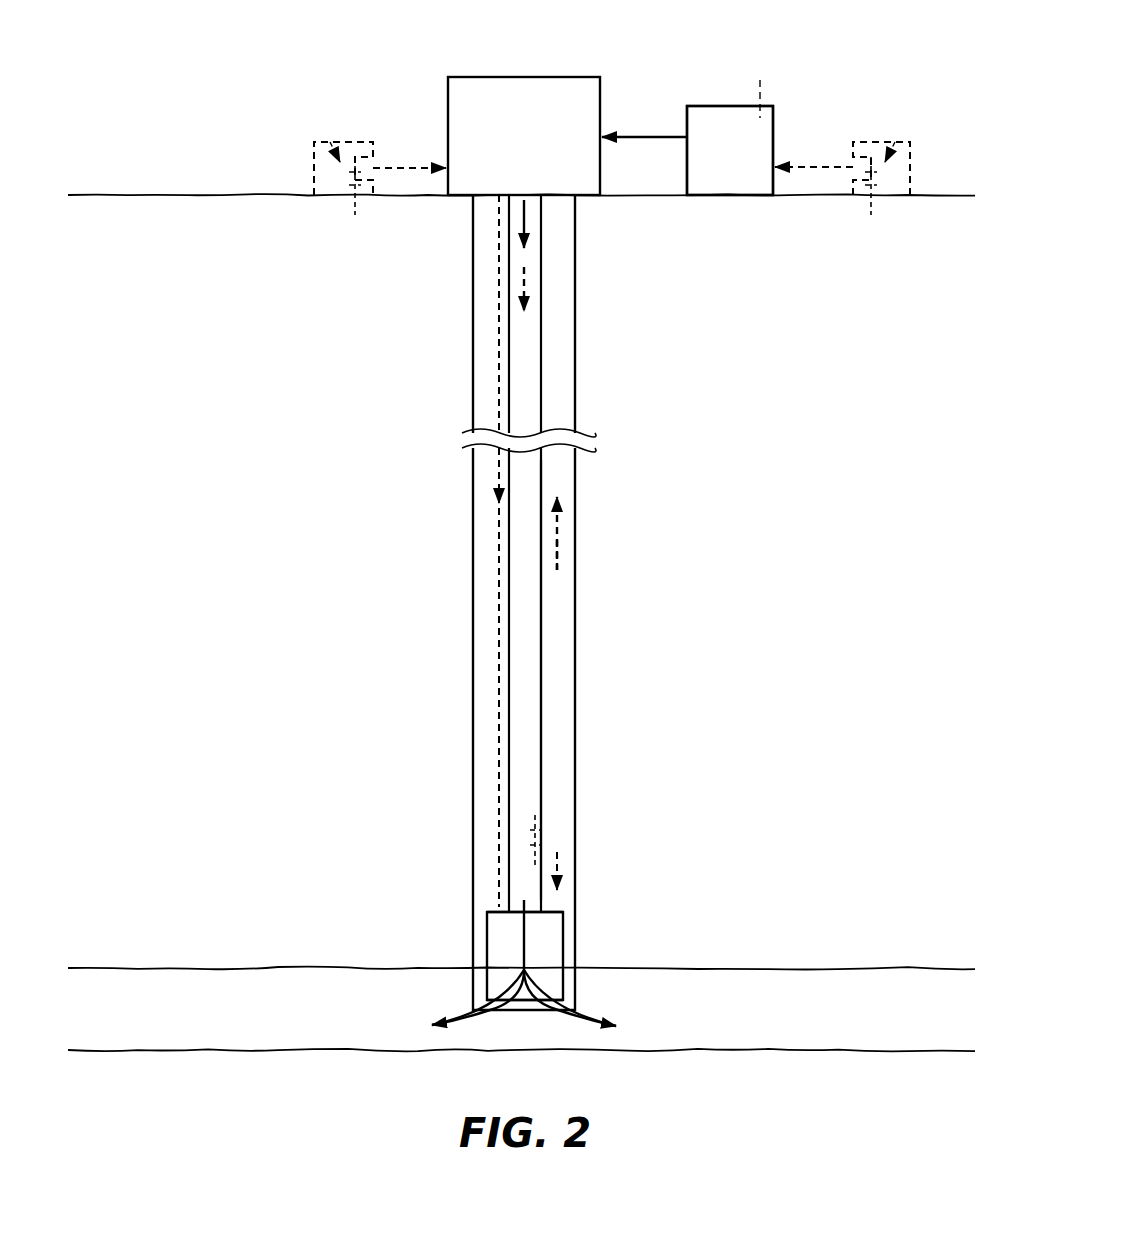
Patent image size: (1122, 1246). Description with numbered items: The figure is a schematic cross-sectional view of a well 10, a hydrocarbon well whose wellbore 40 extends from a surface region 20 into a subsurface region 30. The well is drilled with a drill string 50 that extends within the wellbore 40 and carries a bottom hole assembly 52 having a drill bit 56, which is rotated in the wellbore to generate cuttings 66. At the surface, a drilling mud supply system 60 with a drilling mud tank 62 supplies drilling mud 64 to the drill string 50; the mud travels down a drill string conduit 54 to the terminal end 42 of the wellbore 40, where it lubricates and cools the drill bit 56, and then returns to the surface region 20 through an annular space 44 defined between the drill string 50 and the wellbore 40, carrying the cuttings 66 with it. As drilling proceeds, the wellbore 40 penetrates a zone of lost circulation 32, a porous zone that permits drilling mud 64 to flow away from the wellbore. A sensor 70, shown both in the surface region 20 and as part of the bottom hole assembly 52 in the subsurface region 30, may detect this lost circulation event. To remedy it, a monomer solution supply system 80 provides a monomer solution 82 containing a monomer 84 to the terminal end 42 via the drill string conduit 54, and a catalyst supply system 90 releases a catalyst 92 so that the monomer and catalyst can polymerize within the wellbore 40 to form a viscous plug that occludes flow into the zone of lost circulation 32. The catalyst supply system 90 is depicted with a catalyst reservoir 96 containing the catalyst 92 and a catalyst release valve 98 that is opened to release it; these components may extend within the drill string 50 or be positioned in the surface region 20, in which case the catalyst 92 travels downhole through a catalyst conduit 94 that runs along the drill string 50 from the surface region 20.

The well 10 is at (165, 36).
The surface region 20 is at (167, 128).
The subsurface region 30 is at (167, 438).
The zone of lost circulation 32 is at (212, 985).
The wellbore 40 is at (476, 275).
The terminal end 42 is at (524, 1026).
The annular space 44 is at (562, 392).
The drill string 50 is at (548, 702).
The bottom hole assembly 52 is at (485, 958).
The drill string conduit 54 is at (525, 343).
The drill bit 56 is at (548, 1005).
The drilling mud supply system 60 is at (779, 93).
The drilling mud tank 62 is at (765, 140).
The drilling mud 64 is at (654, 137).
The cuttings 66 is at (560, 558).
The sensor 70 is at (468, 97).
The monomer solution supply system 80 is at (798, 107).
The monomer solution 82 is at (727, 118).
The monomer 84 is at (757, 83).
The catalyst supply system 90 is at (312, 153).
The catalyst 92 is at (318, 186).
The catalyst conduit 94 is at (500, 603).
The catalyst reservoir 96 is at (320, 138).
The catalyst release valve 98 is at (495, 915).